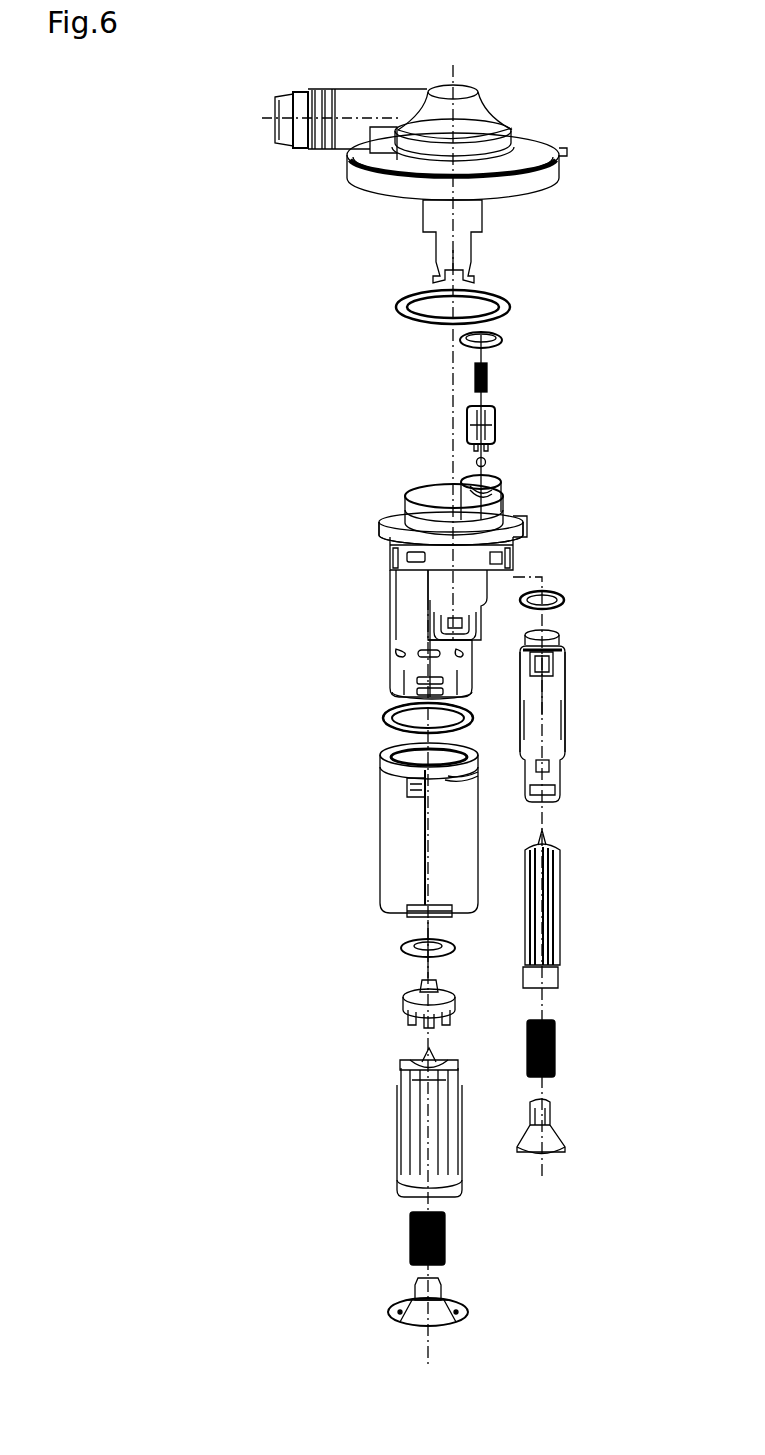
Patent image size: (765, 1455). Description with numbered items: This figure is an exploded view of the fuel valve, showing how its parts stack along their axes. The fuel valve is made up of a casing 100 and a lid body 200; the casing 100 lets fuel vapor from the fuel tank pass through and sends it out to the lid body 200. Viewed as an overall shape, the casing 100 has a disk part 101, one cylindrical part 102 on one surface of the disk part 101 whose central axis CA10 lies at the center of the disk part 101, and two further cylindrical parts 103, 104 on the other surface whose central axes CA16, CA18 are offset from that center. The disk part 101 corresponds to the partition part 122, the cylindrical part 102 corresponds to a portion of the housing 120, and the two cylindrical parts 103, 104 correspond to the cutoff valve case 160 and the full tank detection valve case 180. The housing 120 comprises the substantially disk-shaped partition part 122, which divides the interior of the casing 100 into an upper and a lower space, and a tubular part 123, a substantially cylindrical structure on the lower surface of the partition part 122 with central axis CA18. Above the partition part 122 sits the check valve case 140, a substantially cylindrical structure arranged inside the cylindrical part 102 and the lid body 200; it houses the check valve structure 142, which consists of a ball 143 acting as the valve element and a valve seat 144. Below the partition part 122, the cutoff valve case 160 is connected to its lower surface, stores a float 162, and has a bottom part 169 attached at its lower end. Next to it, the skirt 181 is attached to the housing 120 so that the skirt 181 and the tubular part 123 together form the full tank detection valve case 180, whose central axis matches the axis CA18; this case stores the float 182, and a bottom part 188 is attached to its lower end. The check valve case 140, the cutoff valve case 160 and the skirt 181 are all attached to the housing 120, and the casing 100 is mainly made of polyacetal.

The lid body 200 is at (503, 101).
The central axis of the cylindrical part CA10 is at (447, 82).
The check valve structure 142 is at (549, 426).
The valve seat 144 is at (497, 424).
The ball 143 is at (486, 462).
The check valve case 140 is at (503, 486).
The cylindrical part 102 is at (405, 510).
The disk part 101 is at (523, 518).
The partition part 122 is at (451, 533).
The housing 120 is at (388, 538).
The tubular part 123 is at (390, 617).
The casing 100 is at (185, 483).
The full tank detection valve case 180 is at (303, 588).
The cylindrical part 104 is at (428, 718).
The skirt 181 is at (380, 832).
The float 182 is at (397, 1129).
The bottom part 188 is at (397, 1316).
The central axis of the tubular part CA18 is at (428, 1343).
The cylindrical part 103 is at (565, 705).
The cutoff valve case 160 is at (542, 702).
The float 162 is at (560, 898).
The bottom part 169 is at (548, 1155).
The central axis of the cutoff valve case CA16 is at (542, 1180).